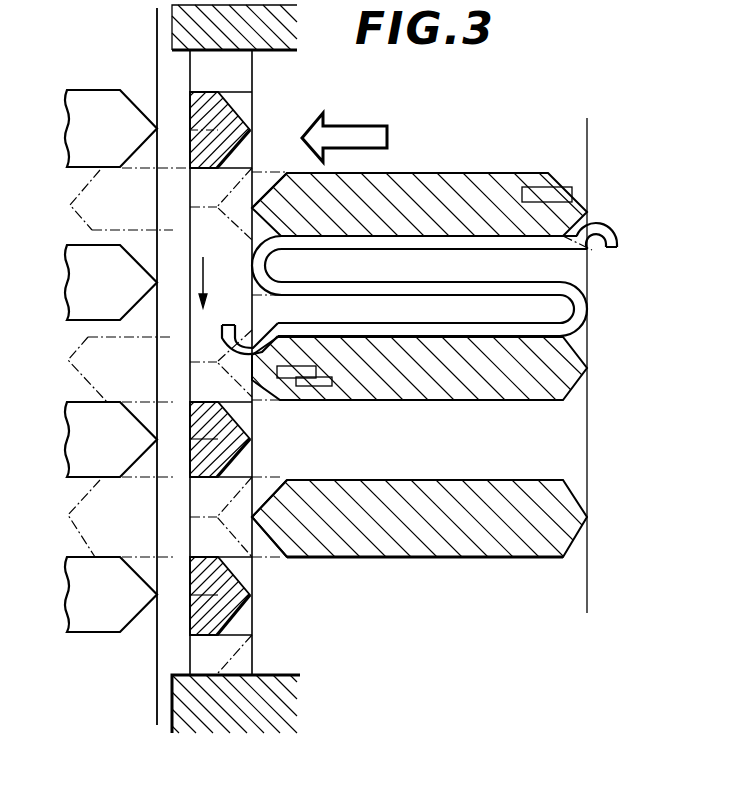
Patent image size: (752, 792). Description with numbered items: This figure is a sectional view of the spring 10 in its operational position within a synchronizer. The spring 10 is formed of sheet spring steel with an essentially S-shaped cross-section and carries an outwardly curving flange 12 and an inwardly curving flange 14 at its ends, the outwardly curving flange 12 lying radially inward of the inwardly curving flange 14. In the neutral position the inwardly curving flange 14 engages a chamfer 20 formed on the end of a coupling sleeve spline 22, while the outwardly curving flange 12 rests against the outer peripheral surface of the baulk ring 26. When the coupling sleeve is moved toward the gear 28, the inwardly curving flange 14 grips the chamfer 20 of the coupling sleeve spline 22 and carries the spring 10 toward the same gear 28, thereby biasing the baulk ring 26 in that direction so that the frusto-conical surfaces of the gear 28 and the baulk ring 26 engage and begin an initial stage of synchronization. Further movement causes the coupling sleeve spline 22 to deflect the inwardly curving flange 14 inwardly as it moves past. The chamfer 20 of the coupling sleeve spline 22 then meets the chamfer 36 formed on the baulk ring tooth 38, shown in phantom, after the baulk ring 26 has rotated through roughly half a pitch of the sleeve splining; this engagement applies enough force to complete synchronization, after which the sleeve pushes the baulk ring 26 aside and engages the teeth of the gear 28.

The spring 10 is at (578, 314).
The outwardly curving flange 12 is at (522, 198).
The inwardly curving flange 14 is at (611, 248).
The chamfer 20 is at (280, 174).
The coupling sleeve spline 22 is at (454, 190).
The baulk ring 26 is at (203, 67).
The gear 28 is at (80, 331).
The baulk ring tooth chamfer 36 is at (222, 164).
The baulk ring tooth 38 is at (216, 115).